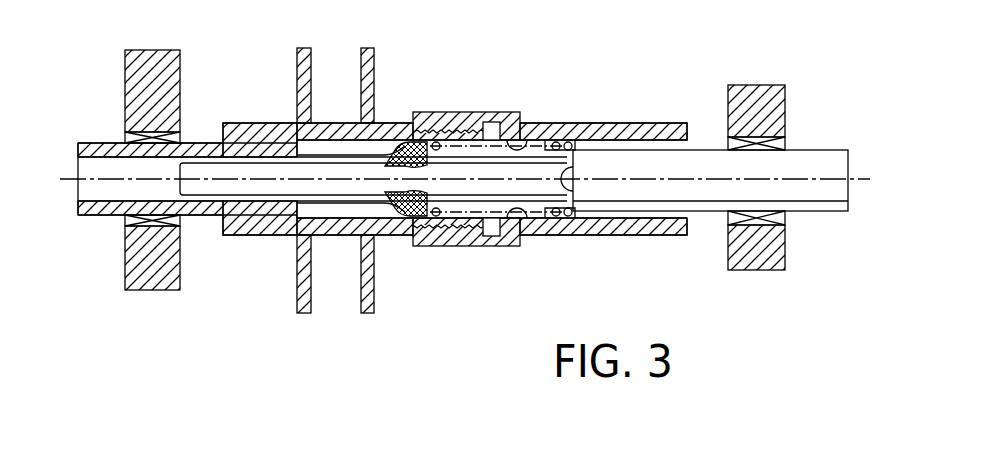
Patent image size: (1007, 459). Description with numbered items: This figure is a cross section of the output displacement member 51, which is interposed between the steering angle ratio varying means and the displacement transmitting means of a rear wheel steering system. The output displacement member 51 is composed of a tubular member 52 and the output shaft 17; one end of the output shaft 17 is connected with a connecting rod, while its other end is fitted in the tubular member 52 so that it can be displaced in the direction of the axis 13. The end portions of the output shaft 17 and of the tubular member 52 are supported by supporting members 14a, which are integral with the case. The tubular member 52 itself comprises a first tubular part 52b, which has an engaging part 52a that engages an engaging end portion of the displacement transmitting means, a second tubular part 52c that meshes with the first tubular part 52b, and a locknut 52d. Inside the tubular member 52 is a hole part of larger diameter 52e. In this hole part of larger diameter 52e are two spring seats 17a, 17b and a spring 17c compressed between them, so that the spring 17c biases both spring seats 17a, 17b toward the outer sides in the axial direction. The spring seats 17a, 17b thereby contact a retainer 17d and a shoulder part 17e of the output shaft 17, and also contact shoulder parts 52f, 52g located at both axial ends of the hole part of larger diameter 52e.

The axis 13 is at (817, 180).
The supporting members 14a is at (182, 67).
The output shaft 17 is at (819, 218).
The spring seat 17a is at (403, 237).
The spring seat 17b is at (557, 233).
The spring 17c is at (537, 233).
The retainer 17d is at (345, 122).
The shoulder part 17e is at (597, 235).
The output displacement member 51 is at (483, 111).
The tubular member 52 is at (667, 239).
The engaging part 52a is at (338, 268).
The first tubular part 52b is at (253, 122).
The second tubular part 52c is at (663, 123).
The locknut 52d is at (440, 110).
The hole part of larger diameter 52e is at (532, 133).
The shoulder part 52f is at (407, 135).
The shoulder part 52g is at (573, 133).